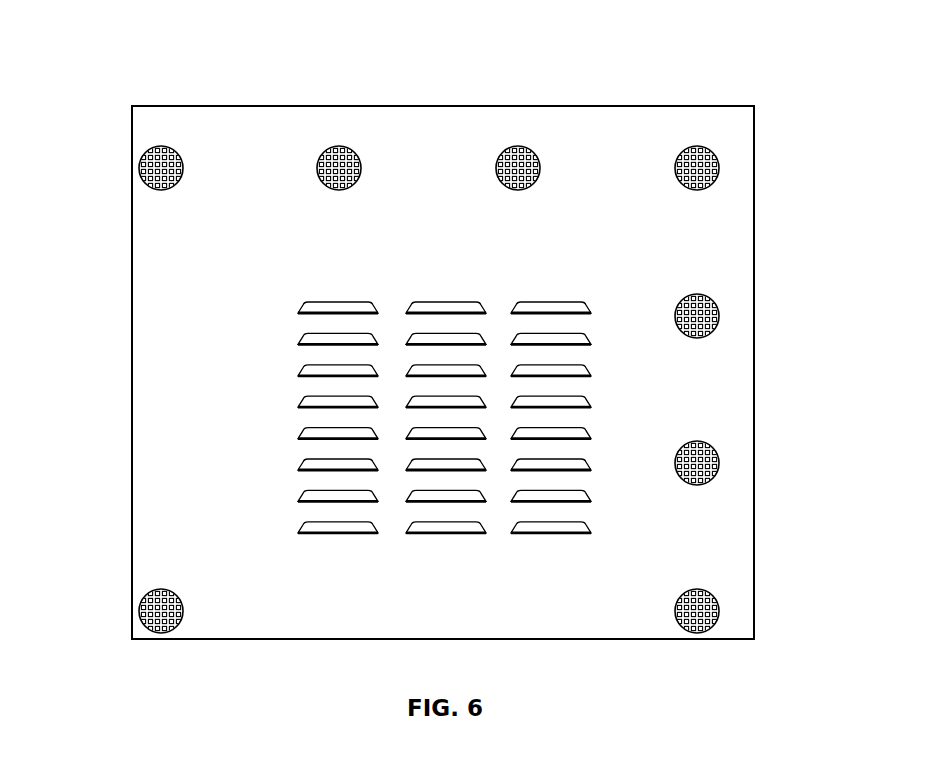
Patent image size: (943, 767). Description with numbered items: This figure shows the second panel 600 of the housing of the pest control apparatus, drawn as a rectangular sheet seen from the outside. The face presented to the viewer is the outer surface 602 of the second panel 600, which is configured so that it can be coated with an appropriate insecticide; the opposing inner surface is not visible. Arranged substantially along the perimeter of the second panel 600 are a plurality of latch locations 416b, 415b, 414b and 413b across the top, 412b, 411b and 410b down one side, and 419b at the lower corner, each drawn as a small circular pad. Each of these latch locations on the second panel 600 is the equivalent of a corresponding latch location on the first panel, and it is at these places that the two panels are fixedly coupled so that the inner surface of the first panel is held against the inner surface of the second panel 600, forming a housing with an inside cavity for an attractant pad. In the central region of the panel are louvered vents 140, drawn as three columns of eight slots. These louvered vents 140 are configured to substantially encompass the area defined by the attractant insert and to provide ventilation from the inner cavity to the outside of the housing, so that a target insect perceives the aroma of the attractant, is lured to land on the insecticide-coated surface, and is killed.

The second panel 600 is at (153, 44).
The outer surface 602 is at (193, 287).
The louvered vents 140 is at (336, 545).
The latch location 416b is at (139, 168).
The latch location 415b is at (340, 146).
The latch location 414b is at (540, 168).
The latch location 413b is at (719, 168).
The latch location 412b is at (719, 316).
The latch location 411b is at (719, 463).
The latch location 410b is at (719, 611).
The latch location 419b is at (139, 611).